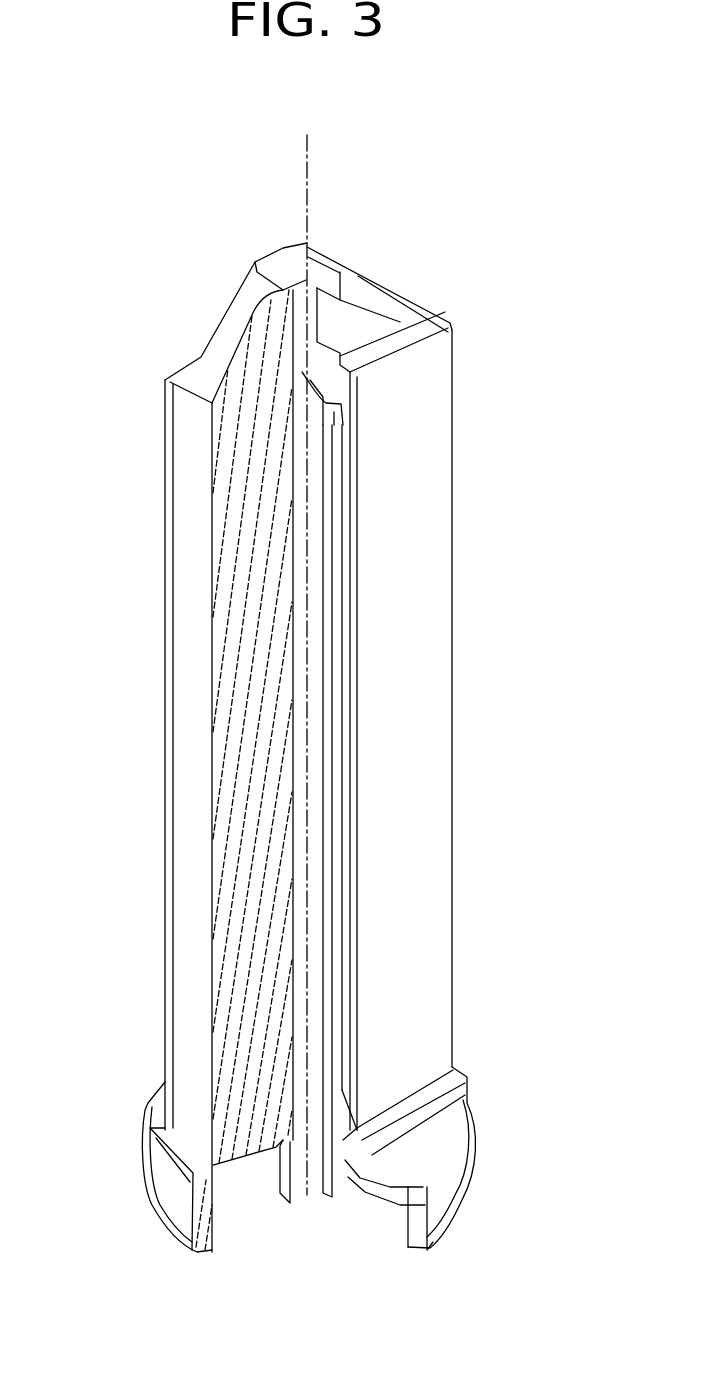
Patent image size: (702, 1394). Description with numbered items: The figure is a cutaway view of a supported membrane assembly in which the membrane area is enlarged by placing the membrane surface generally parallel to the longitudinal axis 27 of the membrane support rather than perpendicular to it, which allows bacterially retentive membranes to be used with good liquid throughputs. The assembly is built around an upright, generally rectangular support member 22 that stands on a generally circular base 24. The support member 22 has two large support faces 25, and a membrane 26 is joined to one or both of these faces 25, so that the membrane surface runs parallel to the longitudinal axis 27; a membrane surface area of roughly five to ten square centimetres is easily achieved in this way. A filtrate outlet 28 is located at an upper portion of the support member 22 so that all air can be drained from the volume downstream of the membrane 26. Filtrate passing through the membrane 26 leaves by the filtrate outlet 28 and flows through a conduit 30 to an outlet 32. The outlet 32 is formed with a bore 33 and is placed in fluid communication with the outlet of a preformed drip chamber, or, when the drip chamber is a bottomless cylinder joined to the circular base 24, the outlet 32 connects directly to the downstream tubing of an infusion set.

The support member 22 is at (190, 610).
The circular base 24 is at (466, 1176).
The large support faces 25 is at (332, 758).
The membrane 26 is at (167, 467).
The longitudinal axis 27 is at (307, 168).
The filtrate outlet 28 is at (338, 427).
The conduit 30 is at (292, 765).
The outlet 32 is at (347, 1193).
The bore 33 is at (306, 1195).